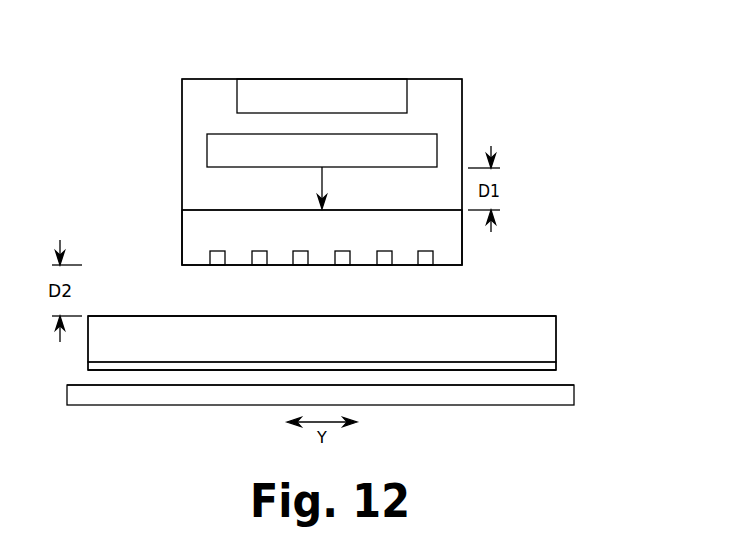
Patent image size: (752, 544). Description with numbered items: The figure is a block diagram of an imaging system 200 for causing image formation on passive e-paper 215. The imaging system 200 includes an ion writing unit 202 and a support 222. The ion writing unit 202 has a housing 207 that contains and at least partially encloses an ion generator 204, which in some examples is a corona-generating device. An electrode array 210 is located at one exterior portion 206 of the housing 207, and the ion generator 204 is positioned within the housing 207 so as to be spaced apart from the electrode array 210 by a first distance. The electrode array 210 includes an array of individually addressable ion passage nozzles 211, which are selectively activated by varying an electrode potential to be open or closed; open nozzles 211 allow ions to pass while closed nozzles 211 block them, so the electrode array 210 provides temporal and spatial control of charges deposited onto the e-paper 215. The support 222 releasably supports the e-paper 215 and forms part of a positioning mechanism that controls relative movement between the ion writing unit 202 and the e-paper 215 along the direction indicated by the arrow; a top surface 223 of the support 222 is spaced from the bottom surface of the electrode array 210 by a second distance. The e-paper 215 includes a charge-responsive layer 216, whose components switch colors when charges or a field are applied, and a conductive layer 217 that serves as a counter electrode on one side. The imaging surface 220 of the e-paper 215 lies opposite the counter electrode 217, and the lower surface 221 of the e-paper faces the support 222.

The imaging system 200 is at (402, 52).
The ion writing unit 202 is at (248, 70).
The ion generator 204 is at (207, 143).
The exterior portion of the housing 206 is at (225, 209).
The housing 207 is at (182, 92).
The electrode array 210 is at (172, 246).
The ion passage nozzles 211 is at (435, 265).
The passive e-paper 215 is at (537, 306).
The charge-responsive layer 216 is at (322, 339).
The conductive layer 217 is at (556, 367).
The imaging surface 220 is at (412, 306).
The bottom surface of substrate 221 is at (171, 381).
The support 222 is at (583, 399).
The top surface of support 223 is at (571, 385).